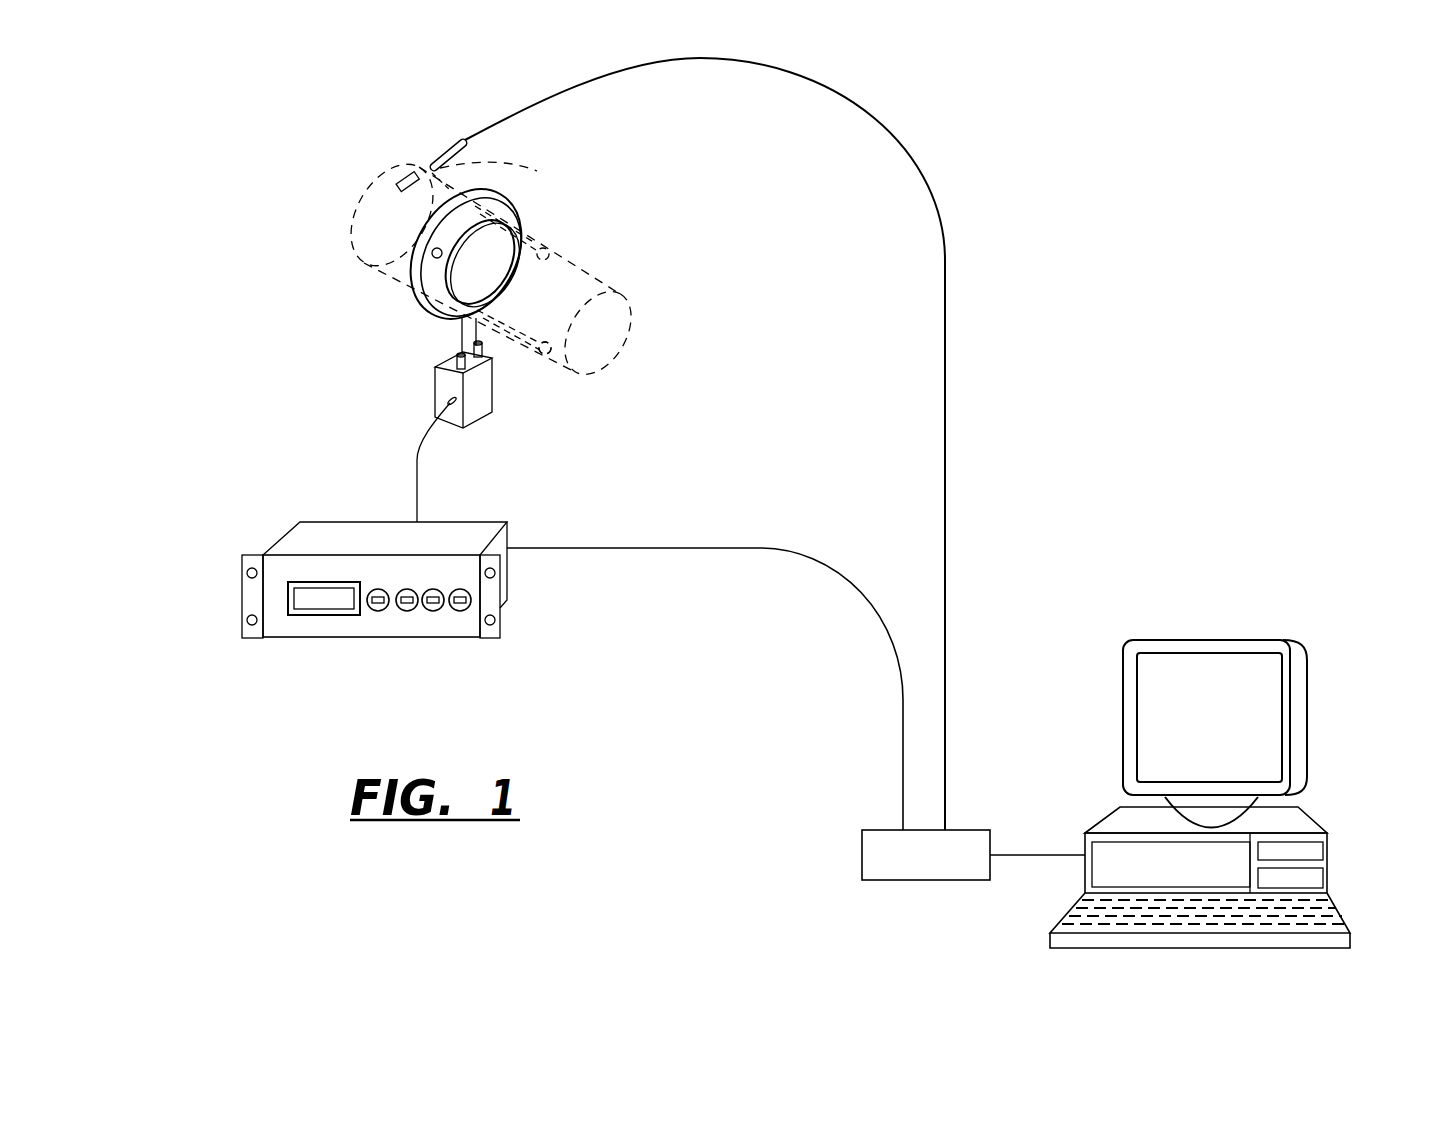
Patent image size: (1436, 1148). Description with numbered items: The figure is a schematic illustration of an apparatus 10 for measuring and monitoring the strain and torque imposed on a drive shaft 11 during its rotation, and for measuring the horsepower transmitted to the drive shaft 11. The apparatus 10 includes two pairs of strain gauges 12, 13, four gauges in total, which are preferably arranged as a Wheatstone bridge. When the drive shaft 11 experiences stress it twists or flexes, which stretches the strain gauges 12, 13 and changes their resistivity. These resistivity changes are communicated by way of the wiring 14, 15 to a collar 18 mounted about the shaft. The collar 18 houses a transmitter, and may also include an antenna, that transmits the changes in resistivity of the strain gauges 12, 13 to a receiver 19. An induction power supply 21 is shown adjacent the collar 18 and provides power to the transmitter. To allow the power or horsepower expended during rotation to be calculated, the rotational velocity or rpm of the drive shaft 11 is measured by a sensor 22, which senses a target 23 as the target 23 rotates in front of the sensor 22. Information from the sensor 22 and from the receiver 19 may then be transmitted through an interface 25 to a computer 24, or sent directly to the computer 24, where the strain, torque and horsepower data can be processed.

The apparatus 10 is at (995, 300).
The drive shaft 11 is at (507, 178).
The strain gauges 12 is at (550, 257).
The strain gauges 13 is at (543, 355).
The wiring 14 is at (540, 240).
The wiring 15 is at (517, 315).
The collar 18 is at (428, 312).
The receiver 19 is at (327, 522).
The induction power supply 21 is at (477, 400).
The sensor 22 is at (437, 153).
The target 23 is at (400, 193).
The computer 24 is at (1307, 833).
The interface 25 is at (968, 882).